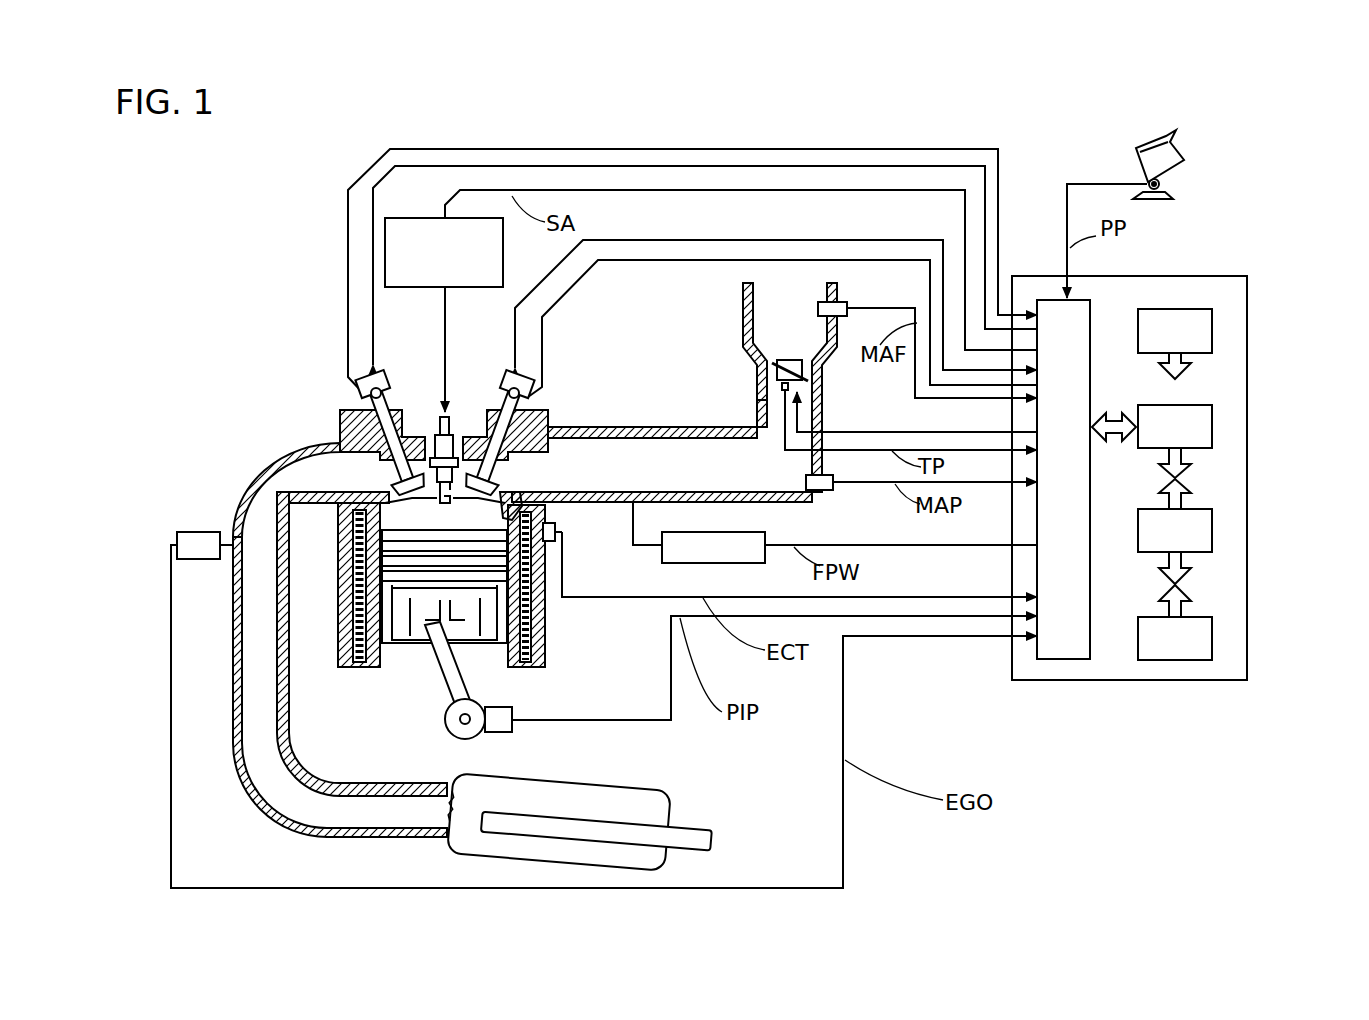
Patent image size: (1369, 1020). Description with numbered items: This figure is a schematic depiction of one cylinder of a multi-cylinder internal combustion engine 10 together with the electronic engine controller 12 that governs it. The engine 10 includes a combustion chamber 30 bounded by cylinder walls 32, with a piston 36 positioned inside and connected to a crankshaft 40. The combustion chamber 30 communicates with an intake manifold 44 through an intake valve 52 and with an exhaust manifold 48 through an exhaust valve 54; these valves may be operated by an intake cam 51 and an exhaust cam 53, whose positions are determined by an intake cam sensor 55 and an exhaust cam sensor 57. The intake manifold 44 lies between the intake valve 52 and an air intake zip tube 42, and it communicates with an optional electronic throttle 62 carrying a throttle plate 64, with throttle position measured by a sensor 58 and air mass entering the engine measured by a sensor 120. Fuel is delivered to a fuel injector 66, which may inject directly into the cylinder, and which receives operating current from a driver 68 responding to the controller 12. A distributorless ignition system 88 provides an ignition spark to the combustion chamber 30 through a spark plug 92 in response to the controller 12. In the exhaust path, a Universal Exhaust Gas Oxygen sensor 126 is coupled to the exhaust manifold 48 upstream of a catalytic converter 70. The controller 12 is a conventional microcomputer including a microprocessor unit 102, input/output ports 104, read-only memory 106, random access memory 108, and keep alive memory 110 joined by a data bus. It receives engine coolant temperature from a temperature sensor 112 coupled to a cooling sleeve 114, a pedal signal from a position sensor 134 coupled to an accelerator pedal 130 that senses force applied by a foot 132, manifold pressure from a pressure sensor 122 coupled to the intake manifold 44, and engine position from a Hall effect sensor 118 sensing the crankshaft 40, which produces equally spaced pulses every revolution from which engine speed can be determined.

The internal combustion engine 10 is at (268, 357).
The electronic engine controller 12 is at (1235, 276).
The combustion chamber 30 is at (440, 512).
The cylinder walls 32 is at (382, 680).
The piston 36 is at (437, 660).
The crankshaft 40 is at (452, 738).
The air intake zip tube 42 is at (790, 387).
The intake manifold 44 is at (662, 464).
The exhaust manifold 48 is at (340, 640).
The intake cam 51 is at (510, 378).
The intake valve 52 is at (518, 470).
The exhaust cam 53 is at (378, 378).
The exhaust valve 54 is at (368, 455).
The intake cam sensor 55 is at (530, 398).
The exhaust cam sensor 57 is at (358, 392).
The throttle position sensor 58 is at (760, 402).
The electronic throttle 62 is at (803, 366).
The throttle plate 64 is at (776, 364).
The fuel injector 66 is at (556, 502).
The driver 68 is at (680, 563).
The catalytic converter 70 is at (625, 783).
The distributorless ignition system 88 is at (398, 218).
The spark plug 92 is at (452, 432).
The microprocessor unit 102 is at (1213, 425).
The input/output ports 104 is at (1092, 308).
The read-only memory 106 is at (1213, 332).
The random access memory 108 is at (1213, 530).
The keep alive memory 110 is at (1213, 635).
The temperature sensor 112 is at (558, 536).
The cooling sleeve 114 is at (545, 612).
The Hall effect sensor 118 is at (500, 735).
The air mass sensor 120 is at (840, 302).
The pressure sensor 122 is at (825, 492).
The Universal Exhaust Gas Oxygen (UEGO) sensor 126 is at (177, 535).
The accelerator pedal 130 is at (1135, 165).
The foot 132 is at (1190, 150).
The position sensor 134 is at (1175, 192).